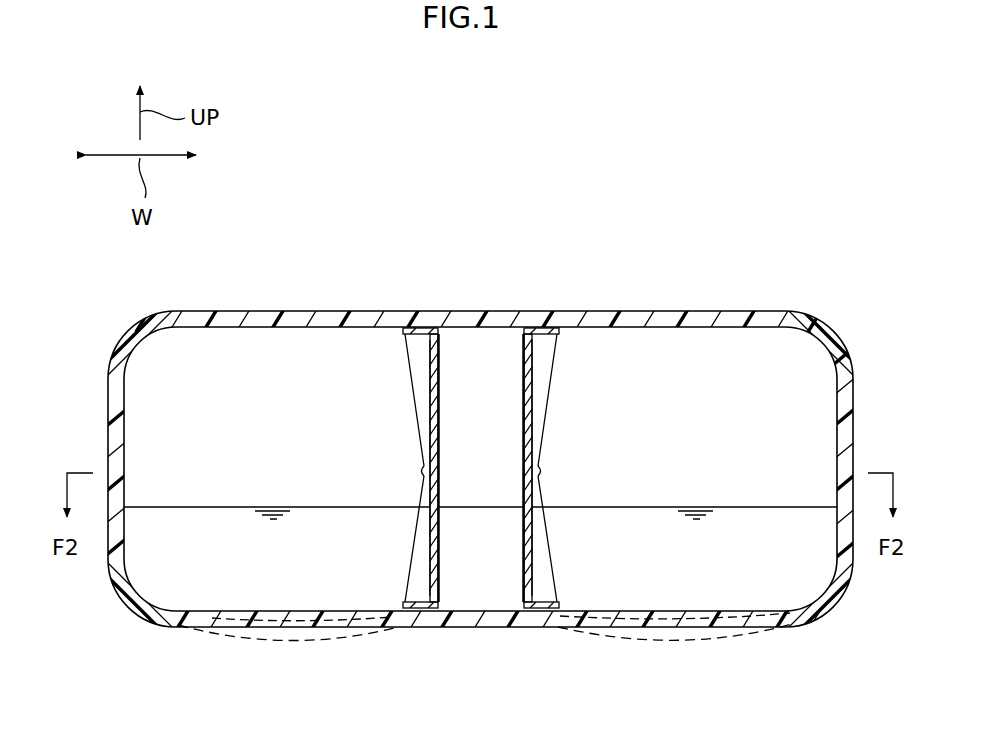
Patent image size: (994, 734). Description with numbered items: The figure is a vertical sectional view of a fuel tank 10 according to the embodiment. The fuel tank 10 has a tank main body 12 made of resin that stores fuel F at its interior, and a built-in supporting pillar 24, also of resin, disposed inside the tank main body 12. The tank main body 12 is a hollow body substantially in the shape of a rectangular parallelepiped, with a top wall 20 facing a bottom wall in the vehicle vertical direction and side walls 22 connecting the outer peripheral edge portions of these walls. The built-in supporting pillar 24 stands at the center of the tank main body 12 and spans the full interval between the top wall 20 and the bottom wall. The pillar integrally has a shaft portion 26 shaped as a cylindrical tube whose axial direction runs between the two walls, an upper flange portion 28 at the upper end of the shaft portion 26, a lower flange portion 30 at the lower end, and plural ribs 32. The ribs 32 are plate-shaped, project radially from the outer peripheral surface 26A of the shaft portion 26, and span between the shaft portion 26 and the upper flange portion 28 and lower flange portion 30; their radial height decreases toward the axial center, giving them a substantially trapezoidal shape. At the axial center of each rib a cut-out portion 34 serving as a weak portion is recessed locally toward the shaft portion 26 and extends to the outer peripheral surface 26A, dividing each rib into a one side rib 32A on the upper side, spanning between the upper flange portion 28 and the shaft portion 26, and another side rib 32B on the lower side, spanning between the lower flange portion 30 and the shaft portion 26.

The fuel tank 10 is at (573, 182).
The tank main body 12 is at (667, 302).
The top wall 20 is at (333, 311).
The side walls 22 is at (107, 440).
The built-in supporting pillar 24 is at (478, 468).
The shaft portion 26 is at (475, 468).
The outer peripheral surface 26A is at (420, 517).
The upper flange portion 28 is at (408, 345).
The lower flange portion 30 is at (553, 590).
The ribs 32 is at (478, 468).
The one side rib 32A is at (408, 393).
The other side rib 32B is at (407, 566).
The cut-out portion 34 is at (415, 470).
The fuel F is at (215, 507).